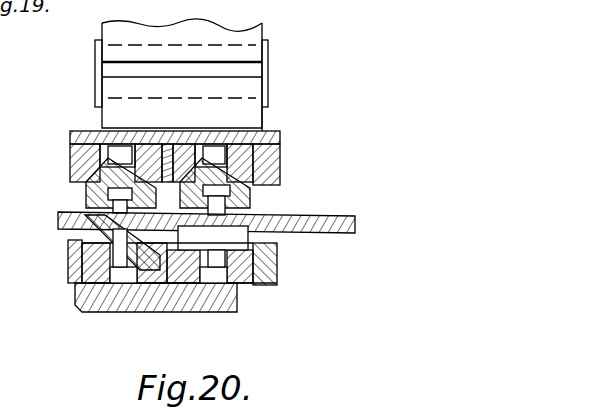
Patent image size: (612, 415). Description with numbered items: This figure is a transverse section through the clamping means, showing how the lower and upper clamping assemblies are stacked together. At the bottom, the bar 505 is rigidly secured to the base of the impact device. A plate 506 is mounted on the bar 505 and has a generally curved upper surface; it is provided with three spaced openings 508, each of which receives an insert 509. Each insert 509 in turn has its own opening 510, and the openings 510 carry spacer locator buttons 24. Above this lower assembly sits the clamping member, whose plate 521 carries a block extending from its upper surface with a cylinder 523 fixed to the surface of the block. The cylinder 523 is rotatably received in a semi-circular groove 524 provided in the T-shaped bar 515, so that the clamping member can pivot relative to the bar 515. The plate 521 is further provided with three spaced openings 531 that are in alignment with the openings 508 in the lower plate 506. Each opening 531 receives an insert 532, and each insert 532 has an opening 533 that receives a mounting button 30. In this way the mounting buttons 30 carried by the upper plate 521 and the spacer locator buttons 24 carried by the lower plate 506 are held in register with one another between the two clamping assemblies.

The T-shaped bar 515 is at (190, 42).
The semi-circular groove 524 is at (235, 46).
The cylinder 523 is at (237, 72).
The opening 533 is at (246, 140).
The insert 532 is at (281, 140).
The spaced openings 531 is at (264, 160).
The plate 521 is at (272, 170).
The mounting buttons 30 is at (85, 192).
The spacer locator buttons 24 is at (72, 238).
The plate 506 is at (68, 250).
The spaced openings 508 is at (78, 262).
The inserts 509 is at (78, 278).
The bar 505 is at (92, 300).
The opening 510 is at (122, 273).